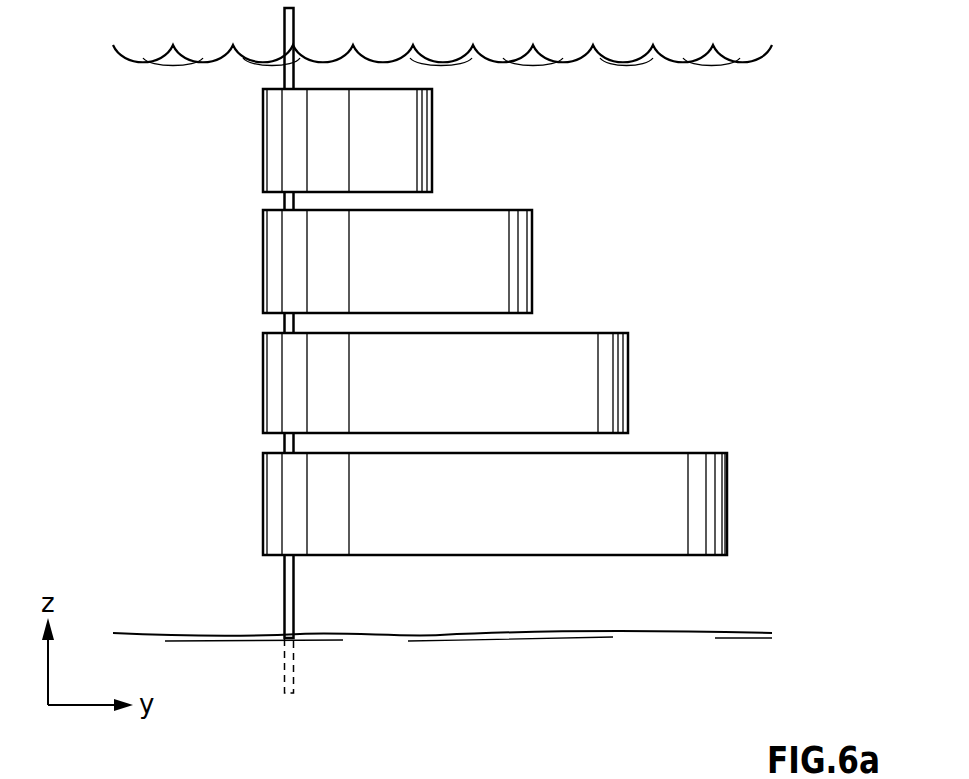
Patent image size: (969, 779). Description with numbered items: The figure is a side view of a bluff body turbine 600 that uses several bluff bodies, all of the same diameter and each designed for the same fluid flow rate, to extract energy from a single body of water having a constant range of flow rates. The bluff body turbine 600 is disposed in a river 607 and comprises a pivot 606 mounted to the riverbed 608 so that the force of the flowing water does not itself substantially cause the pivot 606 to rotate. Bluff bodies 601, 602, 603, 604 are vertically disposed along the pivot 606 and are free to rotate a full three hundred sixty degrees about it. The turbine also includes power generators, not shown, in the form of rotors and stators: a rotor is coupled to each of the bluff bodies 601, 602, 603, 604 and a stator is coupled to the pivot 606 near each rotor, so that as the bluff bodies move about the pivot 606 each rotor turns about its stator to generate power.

The bluff body turbine 600 is at (492, 346).
The bluff body 601 is at (433, 142).
The bluff body 602 is at (533, 258).
The bluff body 603 is at (629, 378).
The bluff body 604 is at (728, 500).
The pivot 606 is at (295, 35).
The river 607 is at (231, 131).
The riverbed 608 is at (231, 691).